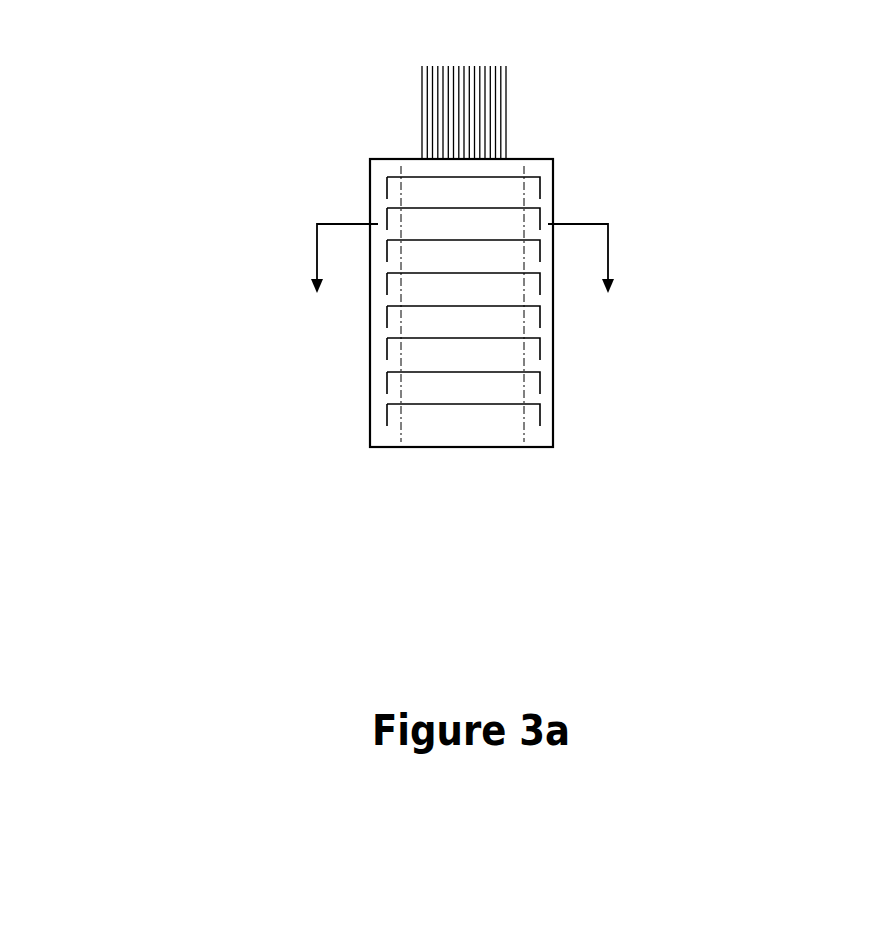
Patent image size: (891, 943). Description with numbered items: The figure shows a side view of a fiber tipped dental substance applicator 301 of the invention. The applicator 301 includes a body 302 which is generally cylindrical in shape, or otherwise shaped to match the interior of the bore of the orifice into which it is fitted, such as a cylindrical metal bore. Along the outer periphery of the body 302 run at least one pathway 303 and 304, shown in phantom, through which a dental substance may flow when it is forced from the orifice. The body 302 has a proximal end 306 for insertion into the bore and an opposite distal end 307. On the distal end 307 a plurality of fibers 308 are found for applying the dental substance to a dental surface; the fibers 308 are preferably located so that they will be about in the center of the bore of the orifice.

The fiber tipped dental substance applicator 301 is at (521, 319).
The body 302 is at (495, 427).
The pathway 303 is at (547, 410).
The pathway 304 is at (386, 405).
The proximal end 306 is at (430, 449).
The distal end 307 is at (543, 159).
The fibers 308 is at (423, 108).